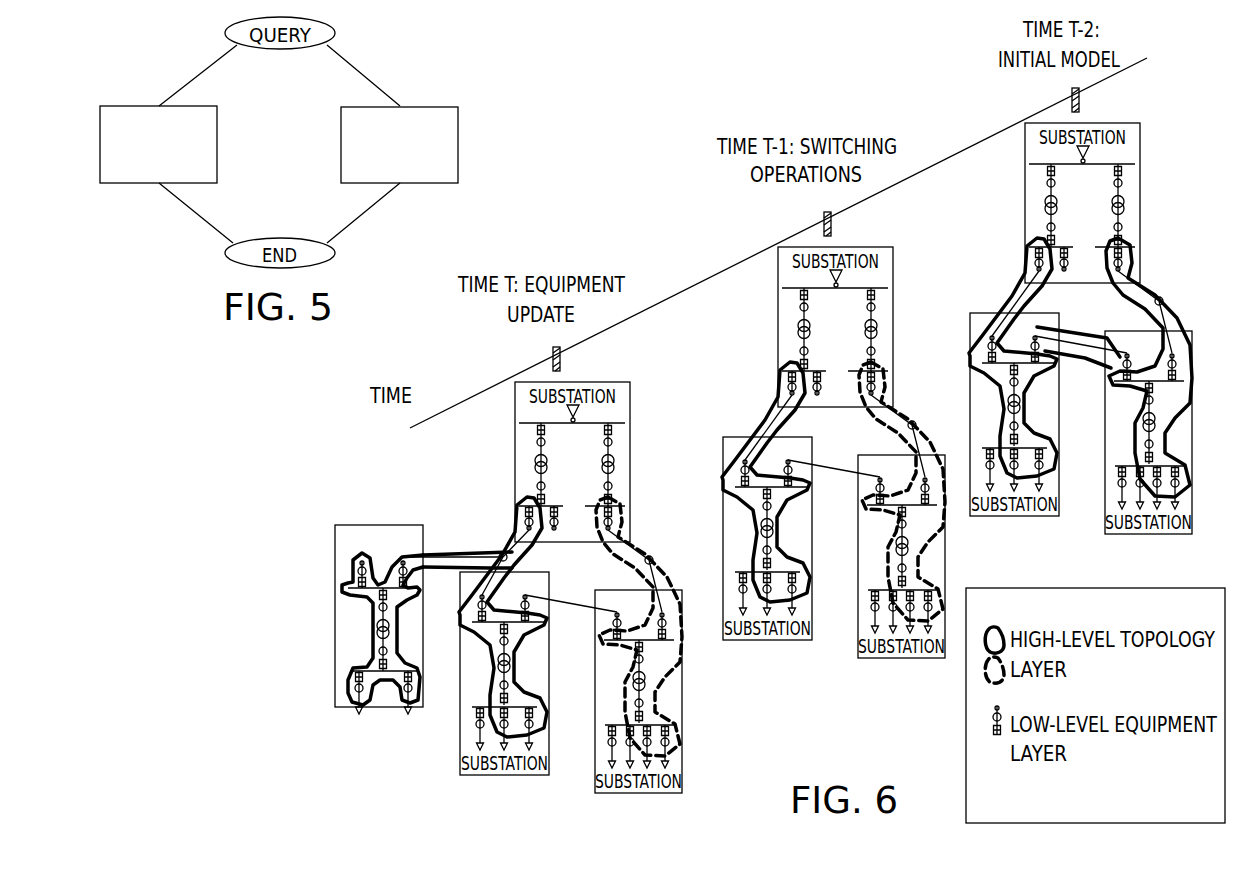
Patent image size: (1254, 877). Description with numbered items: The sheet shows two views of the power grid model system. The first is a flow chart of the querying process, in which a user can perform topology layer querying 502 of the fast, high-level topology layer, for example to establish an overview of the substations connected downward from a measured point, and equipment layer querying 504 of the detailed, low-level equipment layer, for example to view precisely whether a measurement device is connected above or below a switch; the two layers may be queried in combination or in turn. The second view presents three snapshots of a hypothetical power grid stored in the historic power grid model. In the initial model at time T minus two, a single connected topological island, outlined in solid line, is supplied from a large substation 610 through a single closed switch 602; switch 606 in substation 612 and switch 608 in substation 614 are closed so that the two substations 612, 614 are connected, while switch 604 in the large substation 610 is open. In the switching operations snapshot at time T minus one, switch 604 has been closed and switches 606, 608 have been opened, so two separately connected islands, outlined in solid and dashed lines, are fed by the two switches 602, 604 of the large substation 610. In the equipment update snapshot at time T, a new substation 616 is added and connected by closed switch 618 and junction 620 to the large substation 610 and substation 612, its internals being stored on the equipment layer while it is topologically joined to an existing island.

In FIG. 5, the topology layer querying 502 is at (127, 183).
In FIG. 5, the equipment layer querying 504 is at (425, 107).
In FIG. 6, the closed switch 602 is at (758, 458).
In FIG. 6, the switch 604 is at (894, 497).
In FIG. 6, the switch 606 is at (824, 487).
In FIG. 6, the switch 608 is at (844, 519).
In FIG. 6, the large substation 610 is at (850, 330).
In FIG. 6, the substation 612 is at (775, 559).
In FIG. 6, the substation 614 is at (1177, 420).
In FIG. 6, the new substation 616 is at (352, 625).
In FIG. 6, the closed switch 618 is at (417, 587).
In FIG. 6, the junction 620 is at (510, 547).